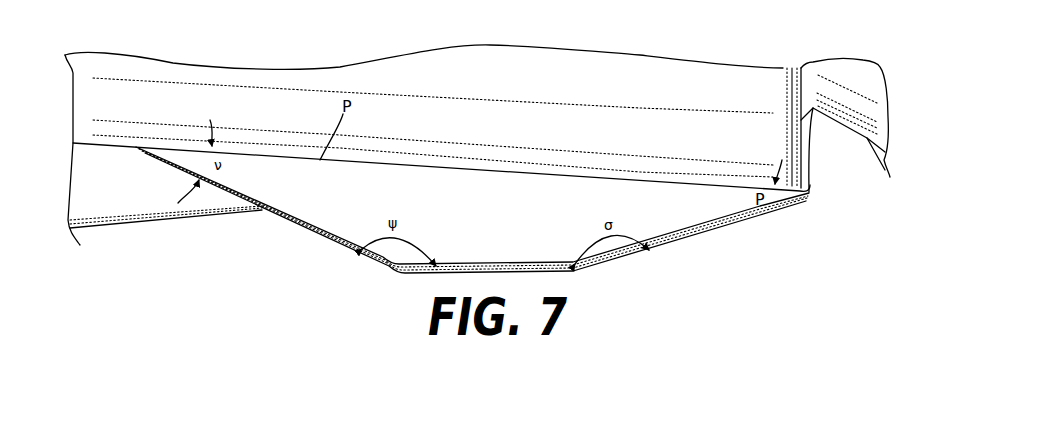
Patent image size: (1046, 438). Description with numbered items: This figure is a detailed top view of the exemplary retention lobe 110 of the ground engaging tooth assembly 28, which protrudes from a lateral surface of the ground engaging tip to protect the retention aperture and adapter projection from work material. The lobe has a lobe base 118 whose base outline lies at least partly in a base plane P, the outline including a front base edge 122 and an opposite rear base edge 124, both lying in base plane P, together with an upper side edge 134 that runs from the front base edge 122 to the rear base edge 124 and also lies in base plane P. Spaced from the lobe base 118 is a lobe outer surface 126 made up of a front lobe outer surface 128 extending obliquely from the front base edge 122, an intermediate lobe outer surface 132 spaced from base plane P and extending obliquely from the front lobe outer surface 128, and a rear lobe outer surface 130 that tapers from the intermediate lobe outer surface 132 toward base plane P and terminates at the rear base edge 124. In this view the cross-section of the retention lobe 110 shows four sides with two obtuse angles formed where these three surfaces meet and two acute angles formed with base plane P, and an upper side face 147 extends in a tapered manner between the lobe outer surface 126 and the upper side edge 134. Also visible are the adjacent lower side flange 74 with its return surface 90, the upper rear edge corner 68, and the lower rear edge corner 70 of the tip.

The ground engaging tooth assembly 28 is at (889, 172).
The upper rear edge corners 68 is at (803, 180).
The lower rear edge corners 70 is at (781, 223).
The lower side flanges 74 is at (128, 248).
The return surfaces 90 is at (128, 189).
The retention lobe 110 is at (320, 192).
The lobe base 118 is at (628, 163).
The front base edge 122 is at (130, 145).
The rear base edge 124 is at (815, 193).
The lobe outer surface 126 is at (280, 244).
The front lobe outer surface 128 is at (327, 245).
The rear lobe outer surface 130 is at (688, 247).
The intermediate lobe outer surface 132 is at (476, 268).
The upper side edge 134 is at (405, 165).
The upper side face 147 is at (527, 185).